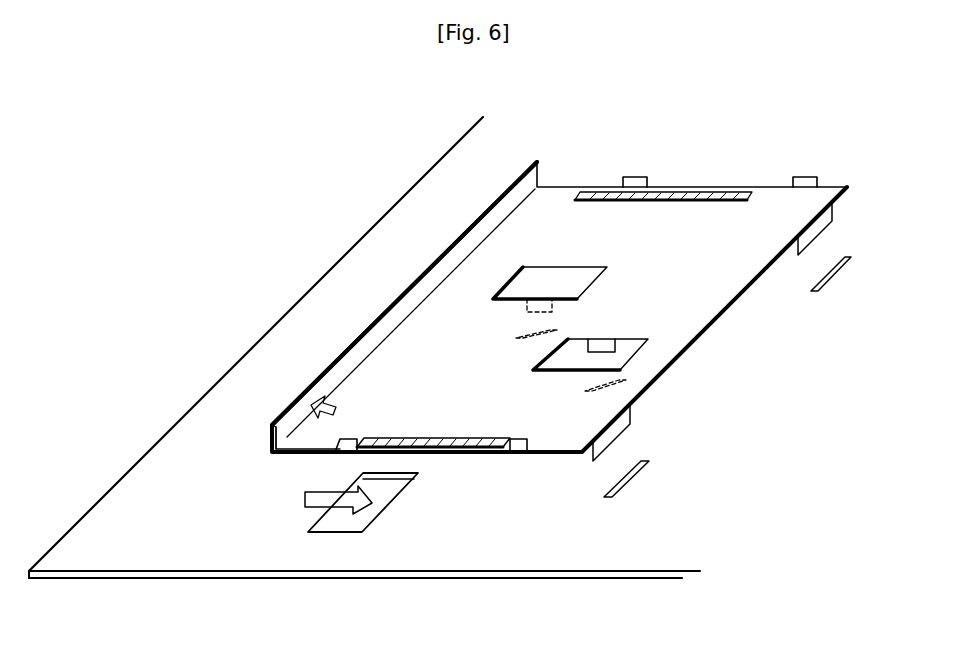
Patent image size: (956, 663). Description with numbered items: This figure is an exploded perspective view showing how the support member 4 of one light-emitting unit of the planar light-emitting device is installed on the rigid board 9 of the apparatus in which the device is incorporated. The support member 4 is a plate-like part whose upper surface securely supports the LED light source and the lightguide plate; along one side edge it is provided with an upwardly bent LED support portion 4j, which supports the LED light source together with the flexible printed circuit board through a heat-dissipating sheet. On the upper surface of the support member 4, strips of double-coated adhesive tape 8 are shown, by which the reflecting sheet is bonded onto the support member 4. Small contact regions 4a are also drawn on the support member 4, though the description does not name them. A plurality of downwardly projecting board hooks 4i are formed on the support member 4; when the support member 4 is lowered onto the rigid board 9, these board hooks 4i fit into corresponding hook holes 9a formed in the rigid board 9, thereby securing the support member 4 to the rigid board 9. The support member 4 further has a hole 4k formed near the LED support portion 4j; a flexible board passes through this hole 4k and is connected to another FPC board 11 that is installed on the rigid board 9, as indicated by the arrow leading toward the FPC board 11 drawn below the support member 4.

The support member 4 is at (700, 319).
The contact portions 4a is at (628, 176).
The board hooks 4i is at (818, 242).
The LED support portion 4j is at (392, 303).
The hole 4k is at (297, 428).
The double-coated adhesive tape 8 is at (675, 189).
The rigid board 9 is at (165, 498).
The hook holes 9a is at (838, 270).
The FPC board 11 is at (307, 507).